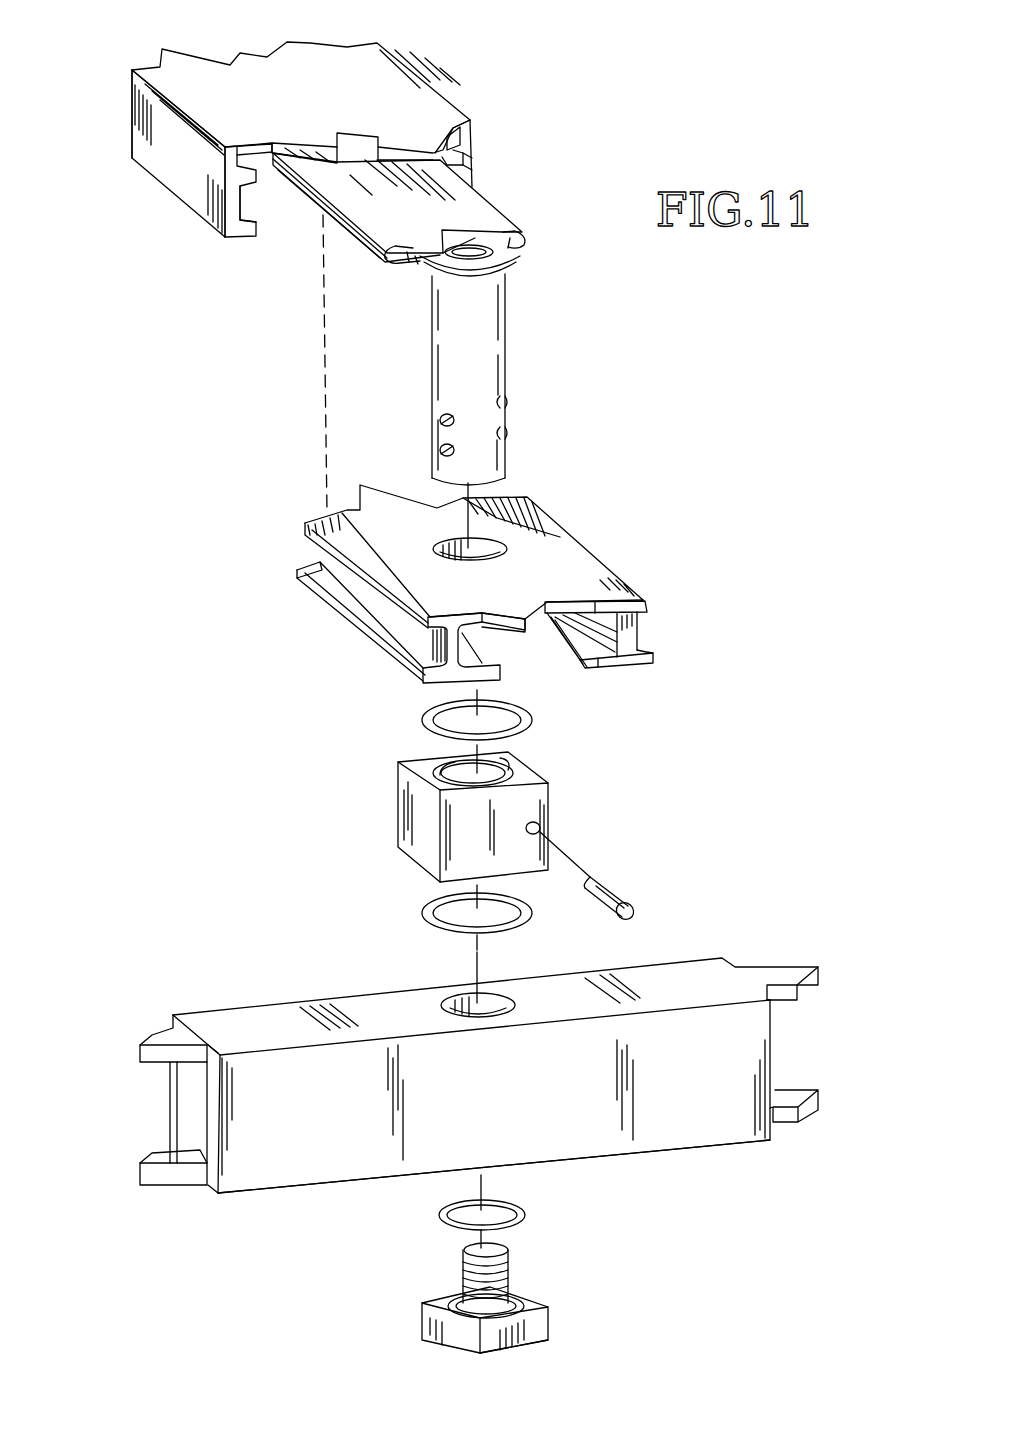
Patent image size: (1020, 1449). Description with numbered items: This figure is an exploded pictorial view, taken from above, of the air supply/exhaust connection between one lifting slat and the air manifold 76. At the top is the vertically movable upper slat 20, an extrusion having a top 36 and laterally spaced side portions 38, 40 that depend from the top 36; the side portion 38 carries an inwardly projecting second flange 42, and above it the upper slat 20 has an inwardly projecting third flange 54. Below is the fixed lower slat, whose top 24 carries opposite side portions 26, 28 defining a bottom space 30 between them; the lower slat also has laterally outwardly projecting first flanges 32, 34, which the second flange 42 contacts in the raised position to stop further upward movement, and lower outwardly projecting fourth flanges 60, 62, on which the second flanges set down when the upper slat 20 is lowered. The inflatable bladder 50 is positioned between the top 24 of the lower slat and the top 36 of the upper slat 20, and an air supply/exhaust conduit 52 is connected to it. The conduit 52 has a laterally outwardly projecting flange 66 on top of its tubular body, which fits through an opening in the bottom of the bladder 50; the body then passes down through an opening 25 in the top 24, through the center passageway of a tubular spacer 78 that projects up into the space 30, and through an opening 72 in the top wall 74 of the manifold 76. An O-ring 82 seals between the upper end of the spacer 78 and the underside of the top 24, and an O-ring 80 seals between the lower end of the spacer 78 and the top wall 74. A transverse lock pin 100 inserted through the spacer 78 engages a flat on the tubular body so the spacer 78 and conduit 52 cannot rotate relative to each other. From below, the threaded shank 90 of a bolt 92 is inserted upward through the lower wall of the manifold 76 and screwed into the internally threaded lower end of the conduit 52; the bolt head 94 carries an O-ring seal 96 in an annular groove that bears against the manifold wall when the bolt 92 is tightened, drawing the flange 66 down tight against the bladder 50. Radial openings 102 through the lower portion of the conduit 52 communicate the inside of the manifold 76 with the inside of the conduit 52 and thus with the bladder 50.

The upper slat 20 is at (393, 92).
The top 36 is at (163, 80).
The side portion 38 is at (178, 167).
The third flange 54 is at (250, 182).
The second flange 42 is at (241, 190).
The side portion 40 is at (460, 157).
The inflatable bladder 50 is at (453, 207).
The flange 66 is at (498, 257).
The air supply/exhaust conduit 52 is at (490, 357).
The radial openings 102 is at (500, 433).
The aperture 25 is at (490, 540).
The top 24 is at (540, 567).
The first flange 32 is at (363, 557).
The fourth flange 60 is at (363, 613).
The side portion 26 is at (437, 637).
The first flange 34 is at (617, 580).
The side portion 28 is at (643, 623).
The fourth flange 62 is at (650, 657).
The bottom space 30 is at (522, 648).
The O-ring 82 is at (530, 718).
The tubular spacer 78 is at (403, 800).
The transverse lock pin 100 is at (620, 888).
The O ring 80 is at (422, 915).
The top wall 74 is at (282, 1013).
The opening 72 is at (465, 1002).
The manifold 76 is at (328, 1197).
The O-ring seal 96 is at (527, 1213).
The threaded shank portion 90 is at (510, 1260).
The head 94 is at (453, 1330).
The bolt 92 is at (537, 1348).